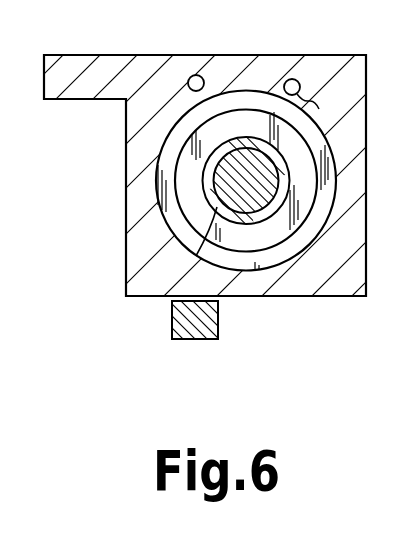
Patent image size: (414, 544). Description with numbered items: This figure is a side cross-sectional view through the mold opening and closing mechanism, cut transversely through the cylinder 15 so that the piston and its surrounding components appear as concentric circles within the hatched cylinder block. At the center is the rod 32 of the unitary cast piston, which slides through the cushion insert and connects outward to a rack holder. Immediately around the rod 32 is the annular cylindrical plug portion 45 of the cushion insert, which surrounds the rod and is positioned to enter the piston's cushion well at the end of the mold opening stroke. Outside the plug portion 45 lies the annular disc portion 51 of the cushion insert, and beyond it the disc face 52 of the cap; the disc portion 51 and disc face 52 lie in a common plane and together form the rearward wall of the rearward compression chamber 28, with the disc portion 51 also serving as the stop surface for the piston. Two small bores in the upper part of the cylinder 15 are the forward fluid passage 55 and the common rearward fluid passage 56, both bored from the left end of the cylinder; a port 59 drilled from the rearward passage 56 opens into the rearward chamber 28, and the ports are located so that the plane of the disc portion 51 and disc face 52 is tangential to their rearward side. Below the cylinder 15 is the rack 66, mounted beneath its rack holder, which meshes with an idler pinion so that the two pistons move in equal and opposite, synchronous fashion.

The cylinder 15 is at (367, 86).
The rearward compression chamber 28 is at (174, 142).
The rod 32 is at (195, 255).
The plug portion 45 is at (204, 178).
The disc portion 51 is at (310, 159).
The disc face 52 is at (315, 230).
The forward fluid passage 55 is at (194, 75).
The rearward fluid passage 56 is at (292, 79).
The port 59 is at (323, 107).
The rack 66 is at (172, 324).